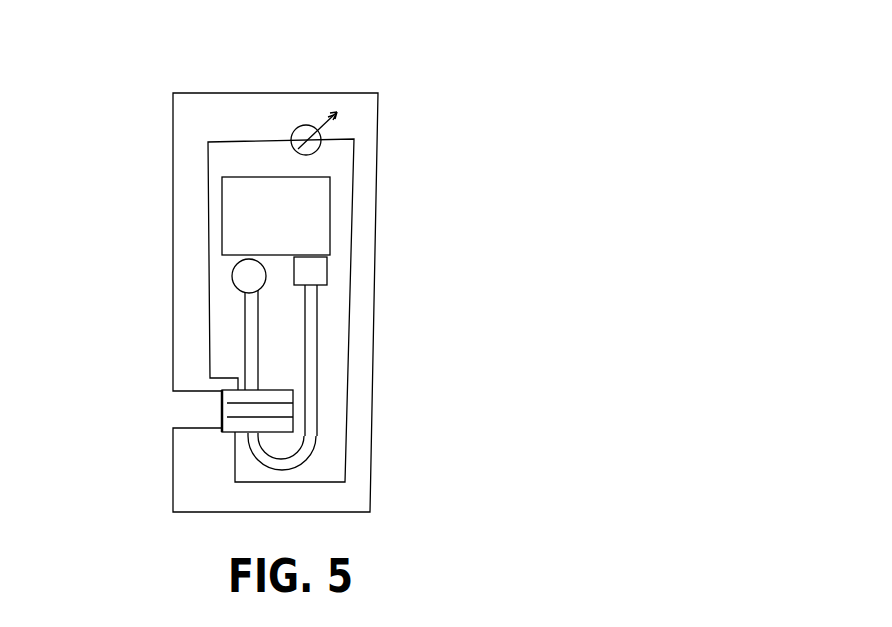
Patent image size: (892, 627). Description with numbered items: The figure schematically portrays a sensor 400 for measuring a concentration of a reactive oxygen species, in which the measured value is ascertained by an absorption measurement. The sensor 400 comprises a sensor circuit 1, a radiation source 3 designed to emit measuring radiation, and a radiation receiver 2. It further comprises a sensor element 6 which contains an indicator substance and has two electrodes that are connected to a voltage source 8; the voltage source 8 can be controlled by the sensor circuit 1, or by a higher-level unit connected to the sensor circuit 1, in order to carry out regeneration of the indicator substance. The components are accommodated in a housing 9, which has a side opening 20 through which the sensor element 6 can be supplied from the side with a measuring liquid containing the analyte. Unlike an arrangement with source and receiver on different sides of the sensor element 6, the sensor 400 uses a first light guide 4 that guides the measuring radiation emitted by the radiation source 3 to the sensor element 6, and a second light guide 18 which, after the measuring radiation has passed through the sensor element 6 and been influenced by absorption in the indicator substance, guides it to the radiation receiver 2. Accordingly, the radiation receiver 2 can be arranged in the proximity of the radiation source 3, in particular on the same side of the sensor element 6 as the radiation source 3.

The sensor 400 is at (435, 98).
The side opening 20 is at (188, 422).
The housing 9 is at (378, 167).
The sensor circuit 1 is at (266, 232).
The radiation receiver 2 is at (310, 271).
The radiation source 3 is at (249, 276).
The first light guide 4 is at (253, 320).
The second light guide 18 is at (313, 327).
The sensor element 6 is at (222, 409).
The voltage source 8 is at (290, 160).